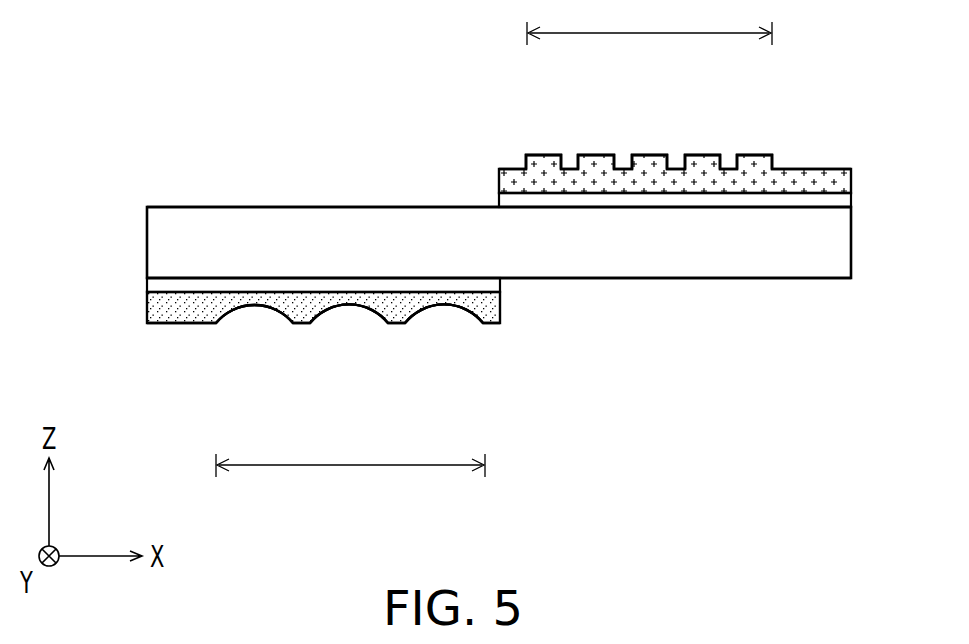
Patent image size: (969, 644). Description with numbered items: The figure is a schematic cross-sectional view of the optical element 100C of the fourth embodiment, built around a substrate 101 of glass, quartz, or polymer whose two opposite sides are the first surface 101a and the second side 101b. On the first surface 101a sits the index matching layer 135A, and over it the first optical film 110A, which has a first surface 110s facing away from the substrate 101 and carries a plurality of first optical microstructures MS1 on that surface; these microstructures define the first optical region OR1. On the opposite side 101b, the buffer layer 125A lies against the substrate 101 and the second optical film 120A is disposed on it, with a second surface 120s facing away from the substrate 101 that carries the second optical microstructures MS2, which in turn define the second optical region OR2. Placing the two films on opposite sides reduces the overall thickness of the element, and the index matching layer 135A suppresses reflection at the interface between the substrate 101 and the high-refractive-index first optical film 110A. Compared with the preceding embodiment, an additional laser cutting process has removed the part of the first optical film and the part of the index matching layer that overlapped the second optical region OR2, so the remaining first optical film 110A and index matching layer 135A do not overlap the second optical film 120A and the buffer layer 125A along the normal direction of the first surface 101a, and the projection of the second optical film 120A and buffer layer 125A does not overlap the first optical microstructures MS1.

The optical element 100C is at (502, 298).
The substrate 101 is at (835, 255).
The first surface of substrate 101a is at (182, 206).
The second side of substrate 101b is at (177, 280).
The first optical film 110A is at (835, 182).
The first surface 110s is at (828, 167).
The index matching layer 135A is at (835, 200).
The first optical microstructures MS1 is at (702, 160).
The buffer layer 125A is at (488, 284).
The second optical film 120A is at (488, 310).
The second surface 120s is at (173, 325).
The second optical microstructures MS2 is at (439, 308).
The first optical region OR1 is at (649, 22).
The second optical region OR2 is at (350, 452).